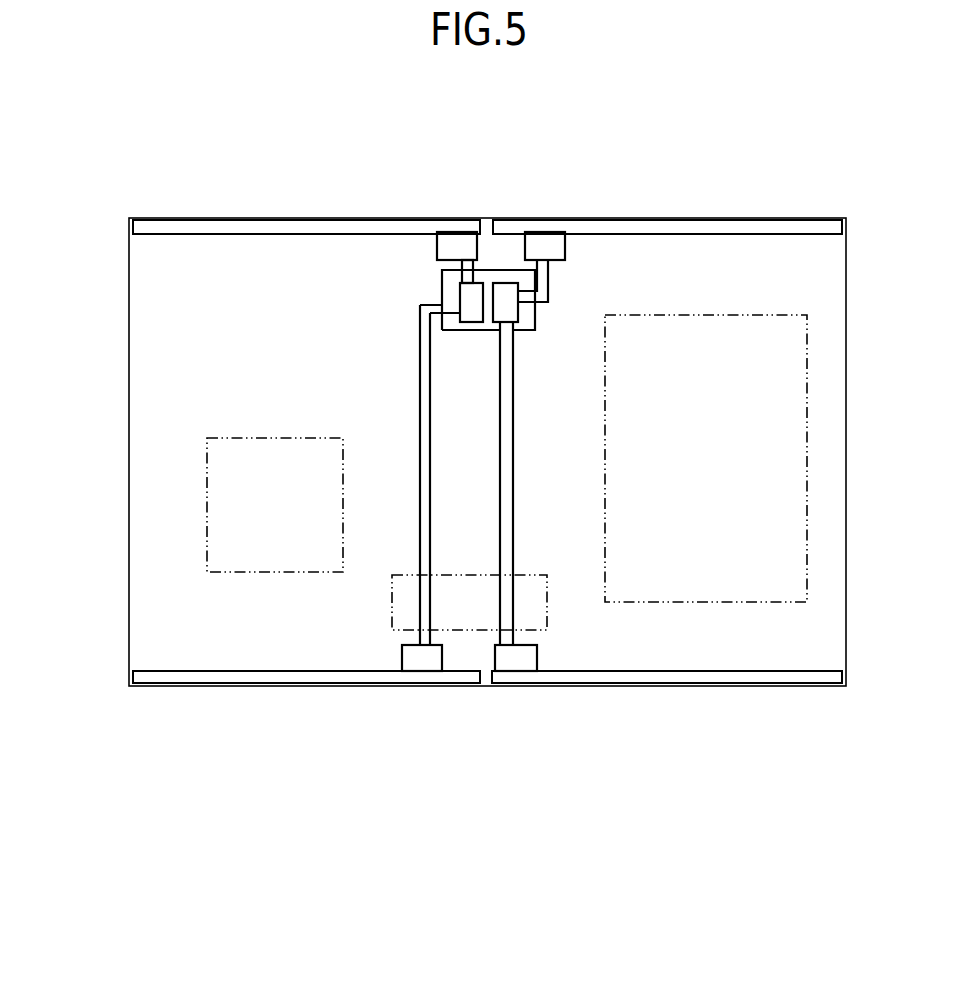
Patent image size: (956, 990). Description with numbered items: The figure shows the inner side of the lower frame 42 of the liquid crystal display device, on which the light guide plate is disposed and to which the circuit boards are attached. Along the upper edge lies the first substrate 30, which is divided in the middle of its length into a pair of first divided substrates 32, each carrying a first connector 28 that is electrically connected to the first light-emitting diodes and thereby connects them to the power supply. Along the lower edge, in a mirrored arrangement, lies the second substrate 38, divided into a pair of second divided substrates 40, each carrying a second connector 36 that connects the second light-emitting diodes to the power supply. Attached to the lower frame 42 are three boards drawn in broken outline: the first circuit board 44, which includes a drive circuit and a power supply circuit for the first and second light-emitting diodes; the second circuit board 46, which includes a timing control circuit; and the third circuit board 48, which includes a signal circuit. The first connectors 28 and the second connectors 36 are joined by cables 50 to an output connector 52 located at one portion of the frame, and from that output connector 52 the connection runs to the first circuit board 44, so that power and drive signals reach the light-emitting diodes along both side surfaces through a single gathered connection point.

The first connector 28 is at (445, 240).
The first substrate 30 is at (487, 152).
The first divided substrate 32 is at (538, 117).
The second connector 36 is at (428, 663).
The second substrate 38 is at (487, 759).
The second divided substrate 40 is at (443, 687).
The lower frame 42 is at (129, 425).
The first circuit board 44 is at (722, 603).
The second circuit board 46 is at (547, 603).
The third circuit board 48 is at (283, 573).
The cable 50 is at (419, 395).
The output connector 52 is at (442, 282).